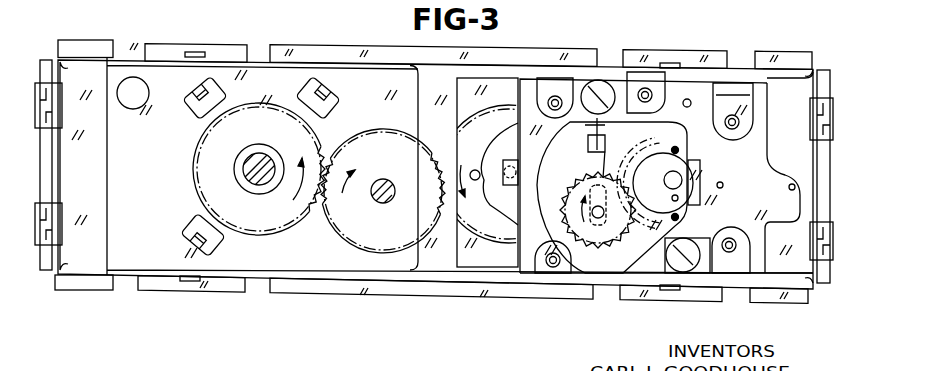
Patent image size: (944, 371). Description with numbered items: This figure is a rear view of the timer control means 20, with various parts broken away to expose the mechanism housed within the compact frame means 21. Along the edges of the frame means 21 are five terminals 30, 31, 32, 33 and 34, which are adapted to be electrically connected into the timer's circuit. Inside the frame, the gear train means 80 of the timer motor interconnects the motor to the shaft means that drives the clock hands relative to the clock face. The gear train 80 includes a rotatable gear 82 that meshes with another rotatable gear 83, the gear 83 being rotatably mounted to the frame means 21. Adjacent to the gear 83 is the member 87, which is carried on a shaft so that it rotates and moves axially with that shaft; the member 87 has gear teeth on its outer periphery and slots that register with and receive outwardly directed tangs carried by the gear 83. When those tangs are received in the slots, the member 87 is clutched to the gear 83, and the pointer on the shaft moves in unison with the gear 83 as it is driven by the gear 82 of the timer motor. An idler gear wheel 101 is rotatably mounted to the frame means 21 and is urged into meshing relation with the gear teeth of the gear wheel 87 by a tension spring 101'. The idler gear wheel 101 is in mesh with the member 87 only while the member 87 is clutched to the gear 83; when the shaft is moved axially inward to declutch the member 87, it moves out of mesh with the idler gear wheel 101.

The timer control means 20 is at (355, 323).
The frame means 21 is at (345, 47).
The terminal 30 is at (560, 90).
The terminal 31 is at (660, 87).
The terminal 32 is at (743, 108).
The terminal 33 is at (743, 262).
The terminal 34 is at (567, 275).
The gear train means 80 is at (366, 117).
The rotatable gear 82 is at (387, 242).
The rotatable gear 83 is at (492, 222).
The member 87 is at (545, 190).
The idler gear wheel 101 is at (623, 250).
The tension spring 101' is at (619, 148).